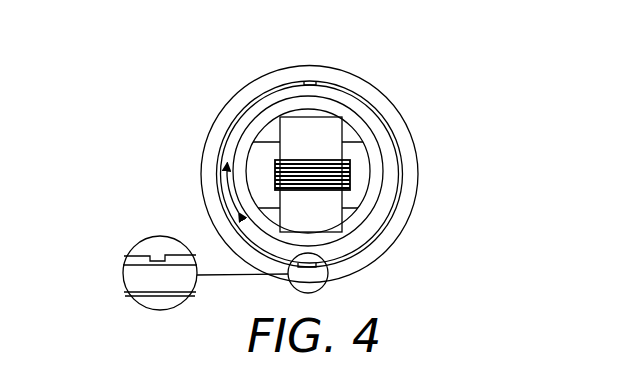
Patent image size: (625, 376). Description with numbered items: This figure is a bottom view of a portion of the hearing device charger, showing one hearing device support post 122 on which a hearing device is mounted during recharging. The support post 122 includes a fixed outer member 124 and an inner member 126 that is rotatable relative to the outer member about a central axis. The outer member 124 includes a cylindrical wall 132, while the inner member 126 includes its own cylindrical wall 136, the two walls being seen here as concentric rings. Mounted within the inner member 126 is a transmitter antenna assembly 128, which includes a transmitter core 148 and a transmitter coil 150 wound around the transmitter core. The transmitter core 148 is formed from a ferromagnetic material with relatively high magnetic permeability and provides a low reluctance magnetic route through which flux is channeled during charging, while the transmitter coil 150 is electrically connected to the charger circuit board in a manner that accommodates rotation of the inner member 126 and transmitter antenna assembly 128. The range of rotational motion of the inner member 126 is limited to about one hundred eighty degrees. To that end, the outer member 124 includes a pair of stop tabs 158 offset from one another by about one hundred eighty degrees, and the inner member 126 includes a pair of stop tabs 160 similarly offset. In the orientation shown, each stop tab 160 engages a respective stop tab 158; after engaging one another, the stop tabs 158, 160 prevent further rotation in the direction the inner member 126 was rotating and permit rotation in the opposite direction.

The hearing device support post 122 is at (238, 167).
The fixed outer member 124 is at (268, 72).
The inner member 126 is at (370, 100).
The transmitter antenna assembly 128 is at (347, 220).
The cylindrical wall 132 is at (142, 298).
The cylindrical wall 136 is at (138, 242).
The transmitter core 148 is at (280, 120).
The transmitter coil 150 is at (275, 165).
The stop tab 158 is at (162, 262).
The stop tab 160 is at (150, 258).